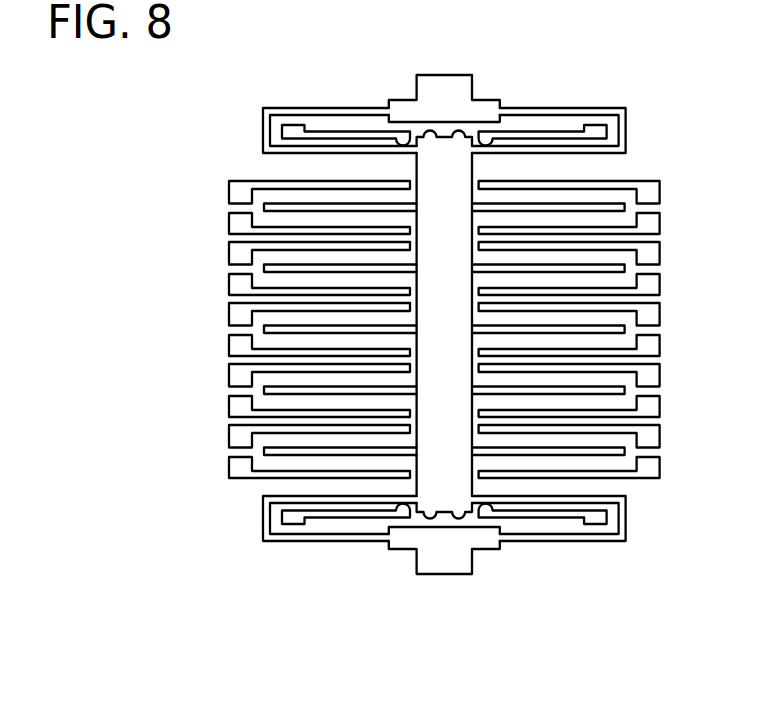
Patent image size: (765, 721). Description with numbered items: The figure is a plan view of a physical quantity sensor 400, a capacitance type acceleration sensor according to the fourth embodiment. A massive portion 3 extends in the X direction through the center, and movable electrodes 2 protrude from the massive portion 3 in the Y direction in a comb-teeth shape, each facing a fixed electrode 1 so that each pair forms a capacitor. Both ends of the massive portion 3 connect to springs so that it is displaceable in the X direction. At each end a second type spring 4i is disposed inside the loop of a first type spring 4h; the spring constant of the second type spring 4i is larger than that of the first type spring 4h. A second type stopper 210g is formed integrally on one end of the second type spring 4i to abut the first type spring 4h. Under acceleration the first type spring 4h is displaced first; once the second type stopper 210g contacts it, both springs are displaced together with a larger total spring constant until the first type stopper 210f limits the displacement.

The physical quantity sensor 400 is at (457, 62).
The first type stopper 210f is at (472, 110).
The second type stopper 210g is at (488, 136).
The first type spring 4h is at (298, 108).
The second type spring 4i is at (332, 133).
The massive portion 3 is at (453, 190).
The fixed electrode 1 is at (270, 364).
The movable electrode 2 is at (295, 389).